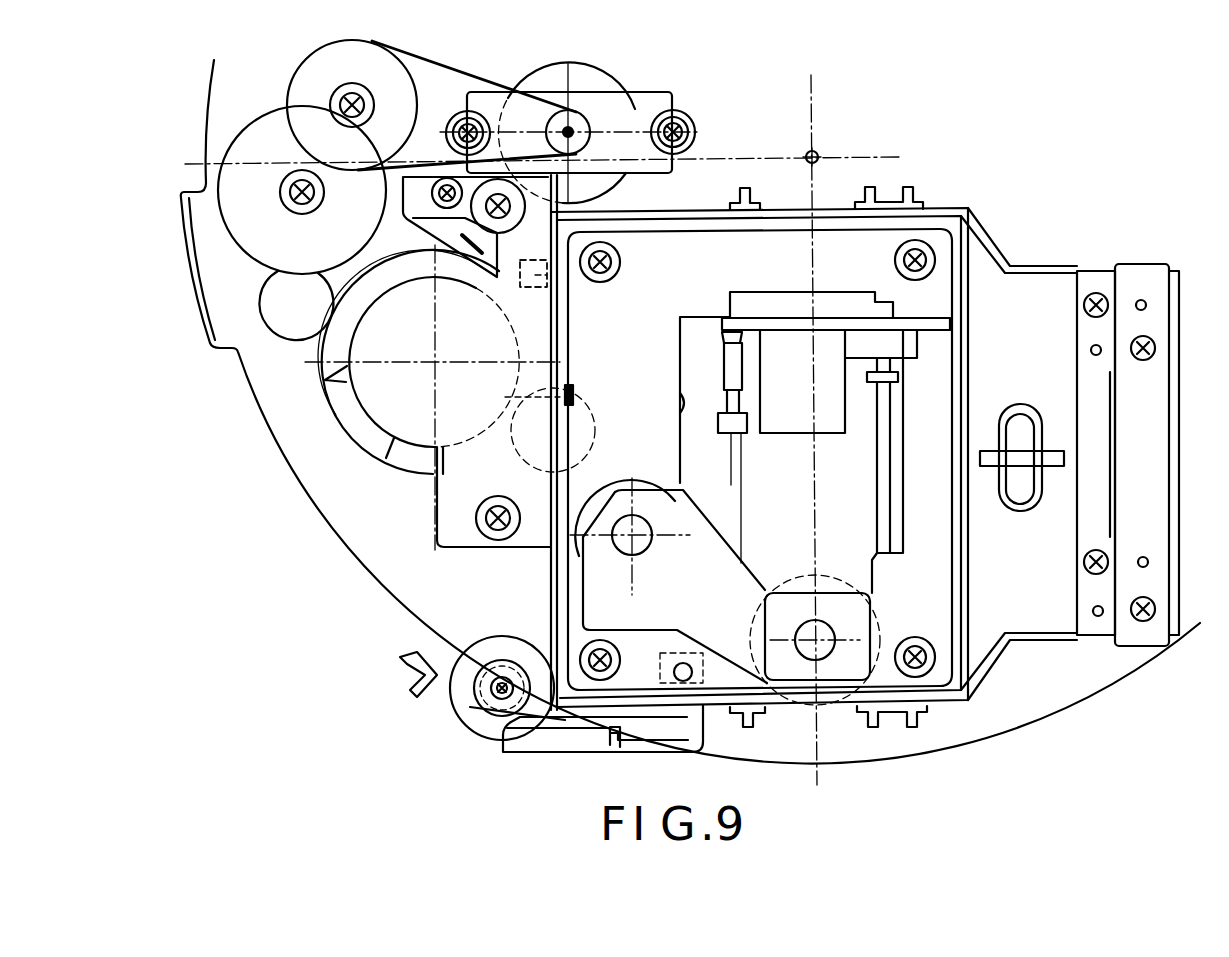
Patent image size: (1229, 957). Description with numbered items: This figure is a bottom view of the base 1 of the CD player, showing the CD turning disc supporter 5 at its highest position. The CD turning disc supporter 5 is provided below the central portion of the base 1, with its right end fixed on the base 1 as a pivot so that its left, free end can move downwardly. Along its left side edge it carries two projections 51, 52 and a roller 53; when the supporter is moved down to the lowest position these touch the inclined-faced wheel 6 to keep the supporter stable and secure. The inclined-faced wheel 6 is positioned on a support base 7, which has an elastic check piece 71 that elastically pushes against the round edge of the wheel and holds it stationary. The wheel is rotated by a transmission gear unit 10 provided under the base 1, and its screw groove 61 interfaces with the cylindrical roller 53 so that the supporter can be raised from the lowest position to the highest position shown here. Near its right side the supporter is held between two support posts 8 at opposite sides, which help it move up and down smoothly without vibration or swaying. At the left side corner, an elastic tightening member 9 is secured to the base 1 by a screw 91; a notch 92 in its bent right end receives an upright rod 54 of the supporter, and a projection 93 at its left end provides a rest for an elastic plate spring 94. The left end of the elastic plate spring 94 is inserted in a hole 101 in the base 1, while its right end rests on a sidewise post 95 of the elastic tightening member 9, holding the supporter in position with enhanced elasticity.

The base 1 is at (380, 537).
The CD turning disc supporter 5 is at (773, 243).
The inclined-faced wheel 6 is at (393, 403).
The support base 7 is at (452, 507).
The support posts 8 is at (890, 198).
The elastic tightening member 9 is at (546, 745).
The transmission gear unit 10 is at (452, 62).
The projection 51 is at (550, 272).
The projection 52 is at (575, 435).
The roller 53 is at (557, 372).
The upright rod 54 is at (713, 660).
The screw groove 61 is at (503, 292).
The elastic check piece 71 is at (400, 238).
The screw 91 is at (473, 707).
The notch 92 is at (683, 660).
The projection 93 is at (500, 690).
The elastic plate spring 94 is at (500, 728).
The sidewise post 95 is at (628, 733).
The hole 101 is at (410, 655).